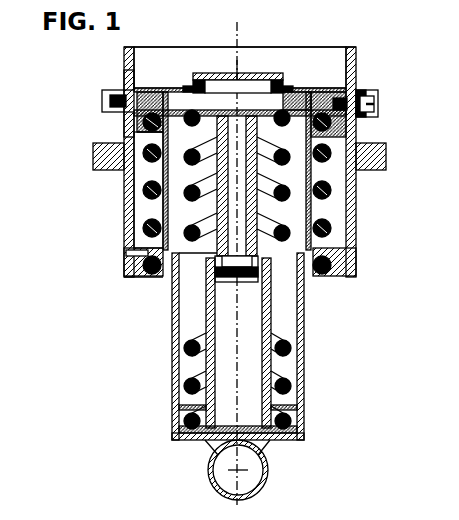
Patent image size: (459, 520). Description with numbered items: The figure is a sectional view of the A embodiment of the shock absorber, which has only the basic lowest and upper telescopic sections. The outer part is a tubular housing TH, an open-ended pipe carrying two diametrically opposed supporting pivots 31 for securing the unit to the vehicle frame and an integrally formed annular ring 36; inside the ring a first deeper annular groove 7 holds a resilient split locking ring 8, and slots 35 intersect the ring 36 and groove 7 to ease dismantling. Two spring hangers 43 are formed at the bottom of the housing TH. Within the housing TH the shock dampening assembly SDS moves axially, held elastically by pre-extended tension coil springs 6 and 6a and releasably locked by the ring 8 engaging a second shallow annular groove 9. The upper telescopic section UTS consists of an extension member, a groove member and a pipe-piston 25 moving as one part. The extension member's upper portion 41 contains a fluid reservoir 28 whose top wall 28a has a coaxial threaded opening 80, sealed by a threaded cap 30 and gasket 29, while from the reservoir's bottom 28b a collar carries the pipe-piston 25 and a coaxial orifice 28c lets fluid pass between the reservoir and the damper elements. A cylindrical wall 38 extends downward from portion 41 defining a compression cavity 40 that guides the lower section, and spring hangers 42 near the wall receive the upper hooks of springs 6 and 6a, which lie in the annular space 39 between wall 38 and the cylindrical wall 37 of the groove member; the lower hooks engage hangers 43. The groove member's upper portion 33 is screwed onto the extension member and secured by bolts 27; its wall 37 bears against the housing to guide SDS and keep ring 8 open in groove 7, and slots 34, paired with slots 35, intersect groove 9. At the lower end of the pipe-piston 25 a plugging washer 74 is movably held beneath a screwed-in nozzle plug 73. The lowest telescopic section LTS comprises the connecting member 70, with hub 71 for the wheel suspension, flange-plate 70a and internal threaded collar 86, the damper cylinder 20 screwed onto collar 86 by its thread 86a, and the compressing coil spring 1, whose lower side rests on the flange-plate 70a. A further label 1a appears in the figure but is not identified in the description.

The compressing coil spring 1 is at (172, 352).
The tube end plate 1a is at (315, 232).
The tension coil spring 6 is at (352, 188).
The tension coil spring 6a is at (312, 210).
The first deeper annular groove 7 is at (122, 117).
The resilient split locking ring 8 is at (102, 101).
The second shallow annular groove 9 is at (130, 86).
The damper cylinder 20 is at (212, 357).
The pipe-piston 25 is at (348, 263).
The securing bolts 27 is at (148, 96).
The fluid reservoir 28 is at (200, 74).
The top wall of reservoir 28a is at (190, 86).
The reservoir bottom 28b is at (178, 92).
The orifice 28c is at (240, 106).
The gasket 29 is at (286, 86).
The threaded cap 30 is at (241, 68).
The supporting pivots 31 is at (93, 150).
The upper portion of groove member 33 is at (338, 95).
The slots 34 is at (358, 92).
The slots 35 is at (368, 96).
The annular ring 36 is at (376, 104).
The cylindrical wall of groove member 37 is at (128, 188).
The cylindrical wall of extension member 38 is at (143, 212).
The annular space 39 is at (150, 230).
The compression cavity 40 is at (140, 260).
The upper portion of extension member 41 is at (296, 92).
The spring hangers 42 is at (358, 140).
The spring hangers 43 is at (160, 258).
The connecting member 70 is at (265, 445).
The flange-plate 70a is at (283, 445).
The hub 71 is at (267, 477).
The nozzle plug 73 is at (224, 282).
The plugging washer 74 is at (238, 285).
The threaded opening 80 is at (262, 88).
The threaded collar 86 is at (294, 404).
The thread 86a is at (260, 408).
The shock absorber embodiment A is at (237, 252).
The tubular housing TH is at (312, 48).
The upper telescopic section UTS is at (308, 276).
The lowest telescopic section LTS is at (304, 348).
The shock dampening assembly SDS is at (165, 275).